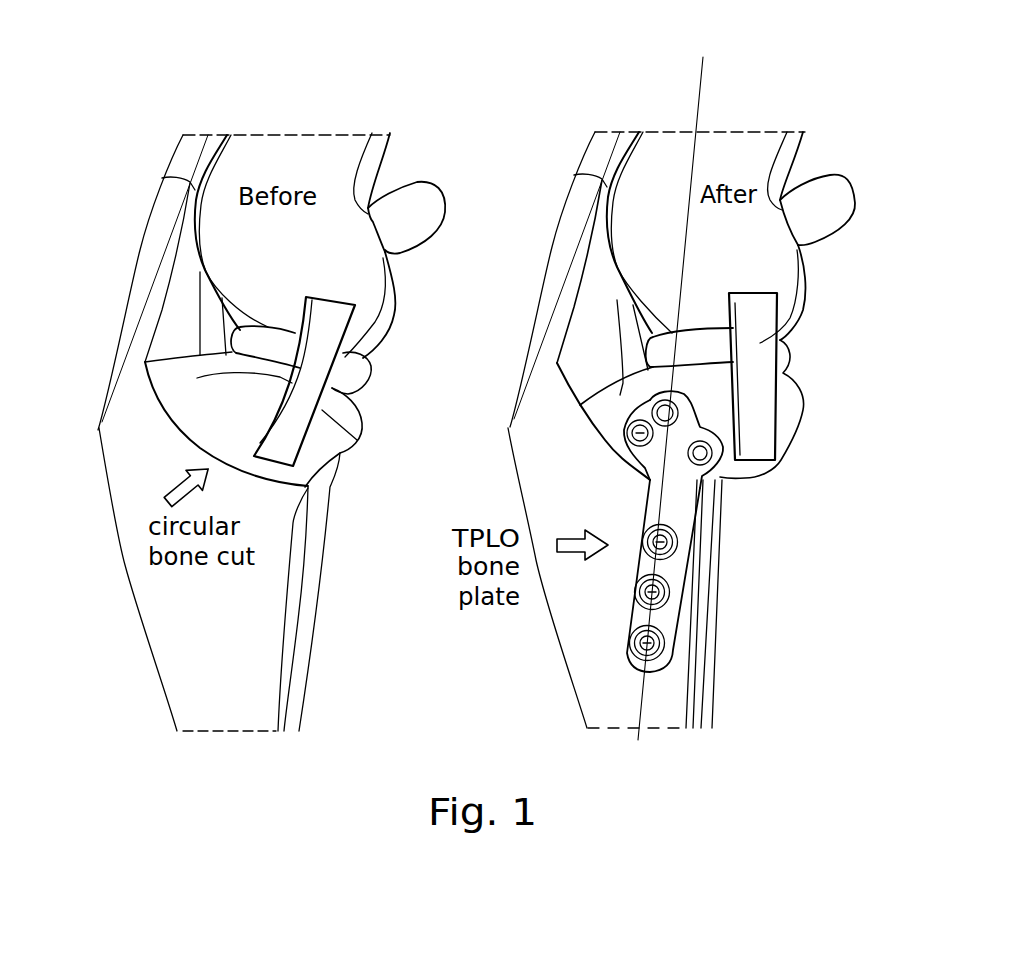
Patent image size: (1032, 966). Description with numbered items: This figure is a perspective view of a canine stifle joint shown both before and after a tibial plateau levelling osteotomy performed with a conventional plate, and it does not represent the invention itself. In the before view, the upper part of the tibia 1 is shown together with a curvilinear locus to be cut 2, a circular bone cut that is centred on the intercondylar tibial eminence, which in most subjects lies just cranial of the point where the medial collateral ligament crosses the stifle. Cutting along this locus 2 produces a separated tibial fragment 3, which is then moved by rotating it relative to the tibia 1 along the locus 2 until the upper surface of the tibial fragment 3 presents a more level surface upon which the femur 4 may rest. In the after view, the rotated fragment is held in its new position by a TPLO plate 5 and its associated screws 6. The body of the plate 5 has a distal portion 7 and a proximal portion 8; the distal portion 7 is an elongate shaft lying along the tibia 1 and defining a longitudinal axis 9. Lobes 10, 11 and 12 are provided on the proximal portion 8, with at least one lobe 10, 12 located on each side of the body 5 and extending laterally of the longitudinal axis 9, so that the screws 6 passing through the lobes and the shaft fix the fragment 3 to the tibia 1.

The tibia 1 is at (138, 492).
The curvilinear locus to be cut 2 is at (158, 405).
The separated tibial fragment 3 is at (177, 380).
The femur 4 is at (667, 157).
The TPLO plate 5 is at (668, 477).
The screws 6 is at (678, 538).
The distal portion 7 is at (653, 510).
The proximal portion 8 is at (617, 447).
The longitudinal axis 9 is at (683, 240).
The lobe 10 is at (690, 399).
The lobe 11 is at (650, 387).
The lobe 12 is at (720, 477).